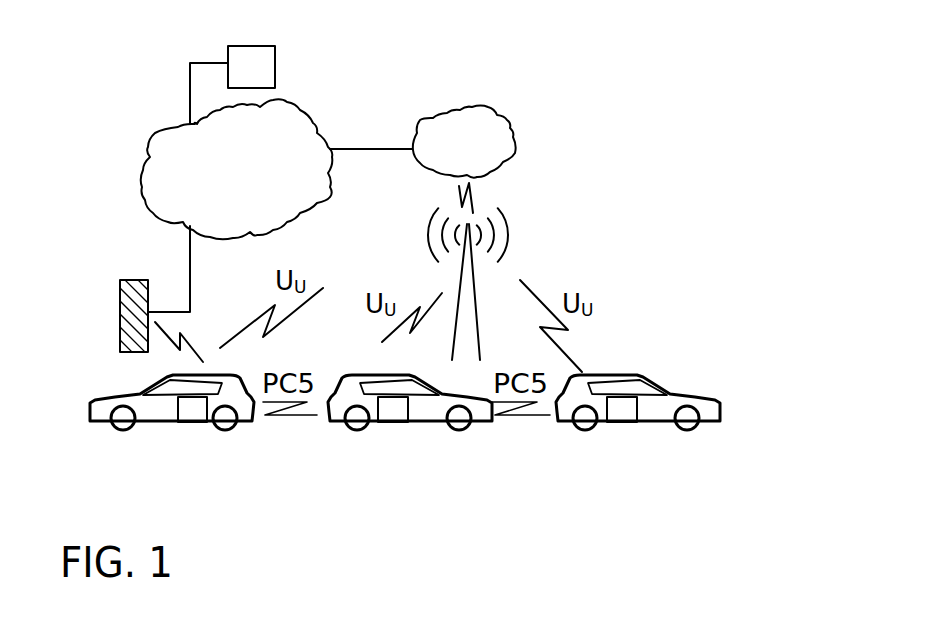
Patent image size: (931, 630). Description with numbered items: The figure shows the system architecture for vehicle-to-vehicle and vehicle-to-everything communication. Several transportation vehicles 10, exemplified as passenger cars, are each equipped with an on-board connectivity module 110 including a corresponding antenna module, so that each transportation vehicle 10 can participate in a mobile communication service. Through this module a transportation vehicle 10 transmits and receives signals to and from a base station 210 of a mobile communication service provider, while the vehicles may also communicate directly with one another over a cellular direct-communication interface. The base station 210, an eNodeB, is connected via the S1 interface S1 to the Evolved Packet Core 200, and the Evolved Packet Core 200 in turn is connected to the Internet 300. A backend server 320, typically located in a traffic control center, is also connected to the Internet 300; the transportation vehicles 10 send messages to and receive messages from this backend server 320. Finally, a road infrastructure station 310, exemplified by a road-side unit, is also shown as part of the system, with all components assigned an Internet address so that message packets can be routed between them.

The transportation vehicle 10 is at (155, 415).
The on-board connectivity module 110 is at (190, 420).
The Evolved Packet Core (EPC) 200 is at (476, 120).
The base station (eNodeB) 210 is at (473, 275).
The Internet 300 is at (282, 141).
The road infrastructure station (road-side unit RSU) 310 is at (139, 281).
The backend server 320 is at (275, 57).
The S1 interface S1 is at (486, 196).